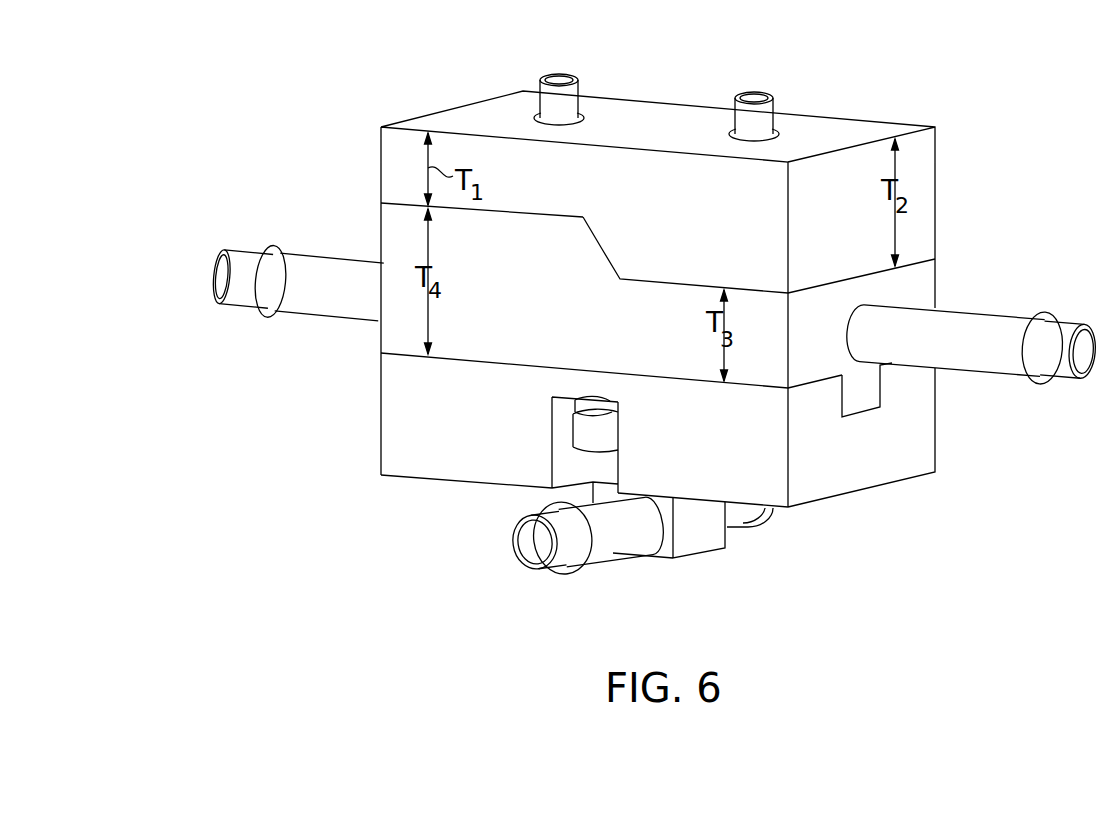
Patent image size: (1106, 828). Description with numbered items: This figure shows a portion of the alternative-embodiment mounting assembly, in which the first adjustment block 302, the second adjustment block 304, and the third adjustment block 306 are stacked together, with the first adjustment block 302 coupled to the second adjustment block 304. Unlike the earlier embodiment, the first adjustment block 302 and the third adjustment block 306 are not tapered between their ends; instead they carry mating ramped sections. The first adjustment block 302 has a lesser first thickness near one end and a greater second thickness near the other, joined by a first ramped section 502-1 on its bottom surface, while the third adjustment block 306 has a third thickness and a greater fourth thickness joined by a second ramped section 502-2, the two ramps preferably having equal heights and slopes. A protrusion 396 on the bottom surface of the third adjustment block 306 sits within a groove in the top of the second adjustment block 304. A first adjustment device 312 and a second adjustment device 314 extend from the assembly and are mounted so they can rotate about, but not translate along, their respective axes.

The first adjustment block 302 is at (366, 157).
The second adjustment block 304 is at (374, 438).
The third adjustment block 306 is at (384, 335).
The first adjustment device 312 is at (593, 550).
The second adjustment device 314 is at (982, 317).
The protrusion 396 is at (862, 404).
The first ramped section 502-1 is at (600, 246).
The second ramped section 502-2 is at (604, 252).